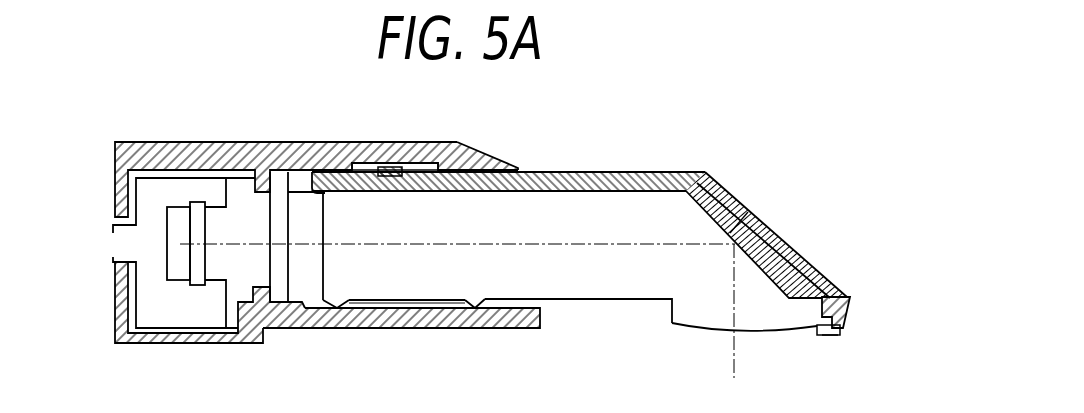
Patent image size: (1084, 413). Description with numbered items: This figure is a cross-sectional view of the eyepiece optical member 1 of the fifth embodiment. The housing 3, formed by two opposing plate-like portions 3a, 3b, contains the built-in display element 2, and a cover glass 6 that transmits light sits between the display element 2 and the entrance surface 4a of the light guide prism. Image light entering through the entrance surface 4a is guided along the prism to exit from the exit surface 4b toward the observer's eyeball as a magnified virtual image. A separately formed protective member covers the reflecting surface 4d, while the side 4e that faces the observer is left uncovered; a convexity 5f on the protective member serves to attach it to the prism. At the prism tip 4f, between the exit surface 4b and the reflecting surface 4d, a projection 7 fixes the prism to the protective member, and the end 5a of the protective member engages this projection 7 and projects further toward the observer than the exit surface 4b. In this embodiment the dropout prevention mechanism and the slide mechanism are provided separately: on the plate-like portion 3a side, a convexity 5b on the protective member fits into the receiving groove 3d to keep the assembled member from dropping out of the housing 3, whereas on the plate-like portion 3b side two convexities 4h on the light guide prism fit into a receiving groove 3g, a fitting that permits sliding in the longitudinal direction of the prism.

The eyepiece optical member 1 is at (660, 111).
The display element 2 is at (137, 243).
The housing 3 is at (175, 141).
The plate-like portion 3a is at (428, 146).
The plate-like portion 3b is at (440, 323).
The receiving groove 3d is at (376, 176).
The receiving groove 3g is at (412, 298).
The entrance surface 4a is at (322, 237).
The exit surface 4b is at (707, 328).
The reflecting surface 4d is at (748, 214).
The side facing the observer 4e is at (613, 300).
The prism tip 4f is at (845, 294).
The convexity 4h is at (340, 298).
The end of the protective member 5a is at (840, 326).
The convexity 5b is at (392, 163).
The convexity 5f is at (707, 175).
The cover glass 6 is at (270, 228).
The projection 7 is at (830, 336).